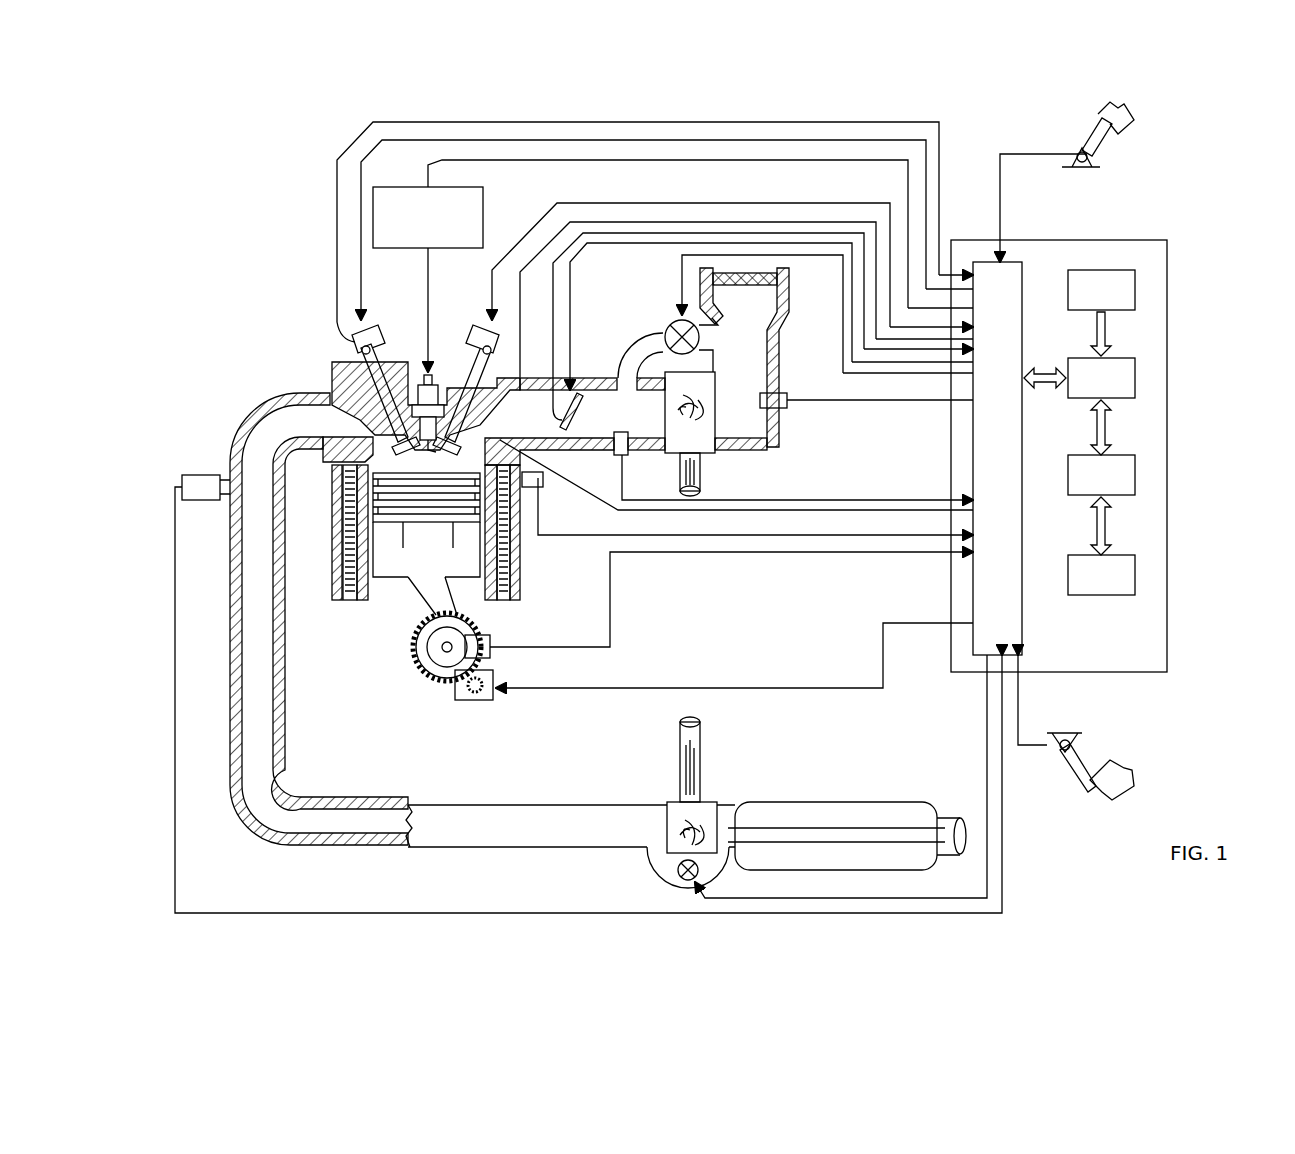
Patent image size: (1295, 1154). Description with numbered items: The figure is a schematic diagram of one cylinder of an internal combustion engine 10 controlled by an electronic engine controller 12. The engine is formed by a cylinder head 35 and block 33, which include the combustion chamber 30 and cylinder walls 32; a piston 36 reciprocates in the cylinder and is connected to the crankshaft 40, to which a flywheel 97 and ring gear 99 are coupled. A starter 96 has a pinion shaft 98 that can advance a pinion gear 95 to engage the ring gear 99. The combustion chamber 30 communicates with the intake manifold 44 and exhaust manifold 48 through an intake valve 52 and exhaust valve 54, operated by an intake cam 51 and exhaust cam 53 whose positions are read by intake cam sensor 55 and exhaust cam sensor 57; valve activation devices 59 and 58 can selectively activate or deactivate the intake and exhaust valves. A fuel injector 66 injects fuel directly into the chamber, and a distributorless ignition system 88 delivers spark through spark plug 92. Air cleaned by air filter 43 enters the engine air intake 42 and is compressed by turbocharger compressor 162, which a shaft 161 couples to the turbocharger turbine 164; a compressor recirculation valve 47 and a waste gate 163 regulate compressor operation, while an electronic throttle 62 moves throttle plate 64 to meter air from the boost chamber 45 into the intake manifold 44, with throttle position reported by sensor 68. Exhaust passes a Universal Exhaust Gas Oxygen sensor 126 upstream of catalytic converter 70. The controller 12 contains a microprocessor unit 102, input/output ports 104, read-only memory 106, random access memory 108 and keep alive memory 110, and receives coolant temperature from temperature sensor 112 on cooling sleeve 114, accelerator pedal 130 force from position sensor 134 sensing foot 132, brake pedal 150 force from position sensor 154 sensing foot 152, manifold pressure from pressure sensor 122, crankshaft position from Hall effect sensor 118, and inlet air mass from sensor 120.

The internal combustion engine 10 is at (268, 316).
The electronic engine controller 12 is at (1165, 240).
The combustion chamber 30 is at (423, 458).
The cylinder walls 32 is at (368, 600).
The block 33 is at (328, 495).
The cylinder head 35 is at (446, 395).
The piston 36 is at (400, 580).
The crankshaft 40 is at (420, 672).
The engine air intake 42 is at (684, 354).
The air filter 43 is at (750, 287).
The intake manifold 44 is at (592, 401).
The boost chamber 45 is at (691, 425).
The compressor recirculation valve 47 is at (675, 320).
The exhaust manifold 48 is at (448, 620).
The intake cam 51 is at (470, 322).
The intake valve 52 is at (465, 420).
The exhaust cam 53 is at (382, 325).
The exhaust valve 54 is at (345, 412).
The intake cam sensor 55 is at (500, 345).
The exhaust cam sensor 57 is at (352, 342).
The valve activation device 58 is at (380, 330).
The valve activation device 59 is at (488, 348).
The electronic throttle 62 is at (582, 400).
The throttle plate 64 is at (572, 418).
The fuel injector 66 is at (528, 487).
The throttle position sensor 68 is at (548, 395).
The catalytic converter 70 is at (770, 802).
The distributorless ignition system 88 is at (392, 187).
The spark plug 92 is at (432, 372).
The pinion gear 95 is at (485, 700).
The starter 96 is at (486, 700).
The flywheel 97 is at (412, 655).
The pinion shaft 98 is at (470, 700).
The ring gear 99 is at (440, 683).
The microprocessor unit 102 is at (1135, 374).
The input/output ports 104 is at (1022, 268).
The read-only memory 106 is at (1135, 285).
The random access memory 108 is at (1135, 470).
The keep alive memory 110 is at (1135, 570).
The temperature sensor 112 is at (755, 506).
The cooling sleeve 114 is at (525, 560).
The Hall effect sensor 118 is at (488, 635).
The air mass sensor 120 is at (785, 396).
The pressure sensor 122 is at (614, 452).
The Universal Exhaust Gas Oxygen sensor 126 is at (558, 682).
The accelerator pedal 130 is at (1114, 171).
The foot 132 is at (1120, 116).
The position sensor 134 is at (1100, 160).
The brake pedal 150 is at (1076, 736).
The foot 152 is at (1122, 760).
The position sensor 154 is at (1058, 742).
The shaft 161 is at (700, 770).
The turbocharger compressor 162 is at (670, 470).
The waste gate 163 is at (680, 883).
The turbocharger turbine 164 is at (665, 802).